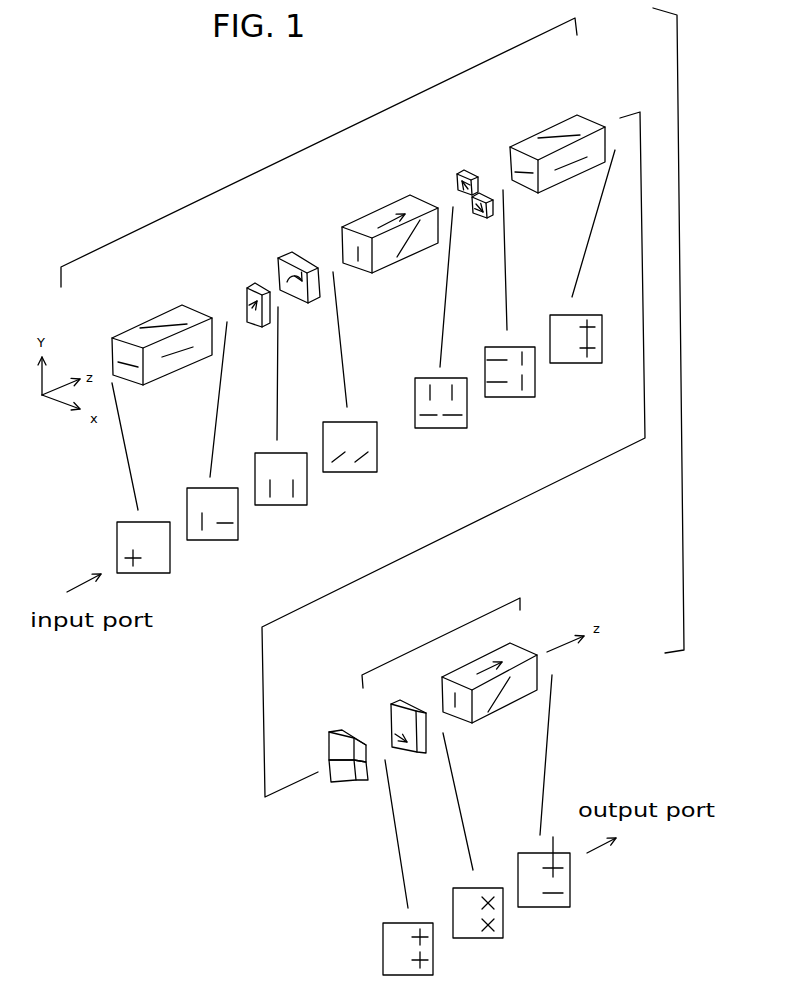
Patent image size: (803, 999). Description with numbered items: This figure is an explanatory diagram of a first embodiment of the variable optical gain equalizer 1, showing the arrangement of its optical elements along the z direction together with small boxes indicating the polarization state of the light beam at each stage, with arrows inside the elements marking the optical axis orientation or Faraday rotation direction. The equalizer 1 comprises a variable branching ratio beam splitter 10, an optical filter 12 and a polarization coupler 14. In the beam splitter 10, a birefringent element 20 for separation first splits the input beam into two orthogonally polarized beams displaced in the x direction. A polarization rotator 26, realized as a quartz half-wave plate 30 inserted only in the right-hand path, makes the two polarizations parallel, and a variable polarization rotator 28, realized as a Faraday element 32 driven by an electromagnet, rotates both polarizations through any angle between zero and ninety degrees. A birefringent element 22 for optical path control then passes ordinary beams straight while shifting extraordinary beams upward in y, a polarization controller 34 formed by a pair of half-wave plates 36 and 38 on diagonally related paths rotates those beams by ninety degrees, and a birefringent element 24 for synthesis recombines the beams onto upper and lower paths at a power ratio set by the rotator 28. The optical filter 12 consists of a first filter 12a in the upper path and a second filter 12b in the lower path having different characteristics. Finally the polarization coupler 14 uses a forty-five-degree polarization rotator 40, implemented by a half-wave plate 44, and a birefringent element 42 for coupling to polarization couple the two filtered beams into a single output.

The variable optical gain equalizer 1 is at (690, 330).
The variable branching ratio beam splitter 10 is at (319, 152).
The optical filter 12 is at (322, 762).
The first filter 12a is at (347, 740).
The second filter 12b is at (347, 770).
The polarization coupler 14 is at (441, 643).
The birefringent element for separation 20 is at (158, 322).
The birefringent element for optical path control 22 is at (367, 220).
The birefringent element for synthesis 24 is at (548, 128).
The polarization rotator 26 is at (233, 303).
The variable polarization rotator 28 is at (287, 275).
The ½ wave plate 30 is at (258, 332).
The Faraday element 32 is at (302, 305).
The polarization controller 34 is at (449, 188).
The ½ wave plate 36 is at (457, 187).
The ½ wave plate 38 is at (478, 220).
The 45-degree polarization rotator 40 is at (412, 744).
The birefringent element for coupling 42 is at (512, 710).
The ½ wave plate 44 is at (408, 703).